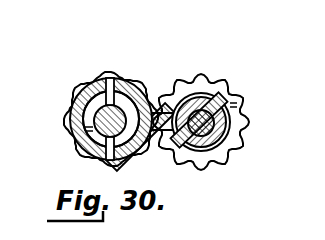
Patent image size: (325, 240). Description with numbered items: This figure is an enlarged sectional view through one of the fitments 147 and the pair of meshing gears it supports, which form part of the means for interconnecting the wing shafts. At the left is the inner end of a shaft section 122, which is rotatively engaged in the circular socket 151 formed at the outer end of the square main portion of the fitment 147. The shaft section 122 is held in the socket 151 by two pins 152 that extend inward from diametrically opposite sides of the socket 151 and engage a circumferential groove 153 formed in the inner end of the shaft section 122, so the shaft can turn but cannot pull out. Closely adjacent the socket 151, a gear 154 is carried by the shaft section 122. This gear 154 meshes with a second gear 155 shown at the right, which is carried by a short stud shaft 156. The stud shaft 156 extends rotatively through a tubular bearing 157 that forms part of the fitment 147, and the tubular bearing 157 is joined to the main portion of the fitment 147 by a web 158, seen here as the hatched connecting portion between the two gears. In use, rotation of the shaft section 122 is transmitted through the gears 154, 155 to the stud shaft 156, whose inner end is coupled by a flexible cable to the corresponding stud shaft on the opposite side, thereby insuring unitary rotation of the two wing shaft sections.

The shaft section 122 is at (90, 100).
The fitment 147 is at (222, 143).
The circular socket 151 is at (80, 148).
The pin 152 is at (109, 77).
The circumferential groove 153 is at (125, 88).
The gear 154 is at (74, 121).
The gear 155 is at (212, 76).
The stud shaft 156 is at (216, 98).
The tubular bearing 157 is at (232, 116).
The web 158 is at (163, 111).